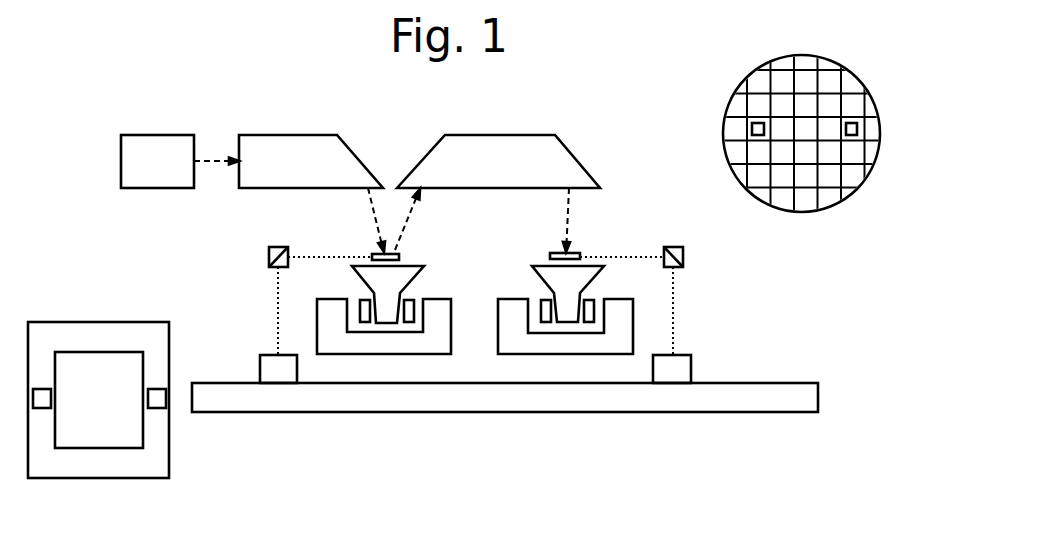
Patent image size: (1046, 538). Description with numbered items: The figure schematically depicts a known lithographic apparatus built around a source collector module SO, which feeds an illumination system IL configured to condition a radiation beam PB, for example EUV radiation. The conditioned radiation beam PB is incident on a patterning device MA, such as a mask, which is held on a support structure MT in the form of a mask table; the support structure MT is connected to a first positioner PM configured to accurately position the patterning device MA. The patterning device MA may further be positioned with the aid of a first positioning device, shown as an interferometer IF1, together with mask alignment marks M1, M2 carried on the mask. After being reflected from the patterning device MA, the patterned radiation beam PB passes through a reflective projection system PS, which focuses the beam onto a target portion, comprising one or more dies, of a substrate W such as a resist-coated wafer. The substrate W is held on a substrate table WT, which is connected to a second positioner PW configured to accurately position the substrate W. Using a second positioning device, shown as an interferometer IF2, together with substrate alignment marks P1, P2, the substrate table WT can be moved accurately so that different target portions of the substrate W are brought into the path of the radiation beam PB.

The source collector module SO is at (157, 161).
The illumination system IL is at (288, 161).
The projection system PS is at (498, 161).
The radiation beam PB is at (371, 209).
The patterning device MA is at (77, 322).
The support structure MT is at (380, 323).
The first positioner PM is at (417, 354).
The substrate W is at (716, 170).
The substrate table WT is at (563, 322).
The second positioner PW is at (596, 354).
The interferometer IF1 is at (271, 247).
The interferometer IF2 is at (683, 257).
The mask alignment mark M1 is at (154, 408).
The mask alignment mark M2 is at (40, 408).
The substrate alignment mark P1 is at (758, 135).
The substrate alignment mark P2 is at (851, 135).